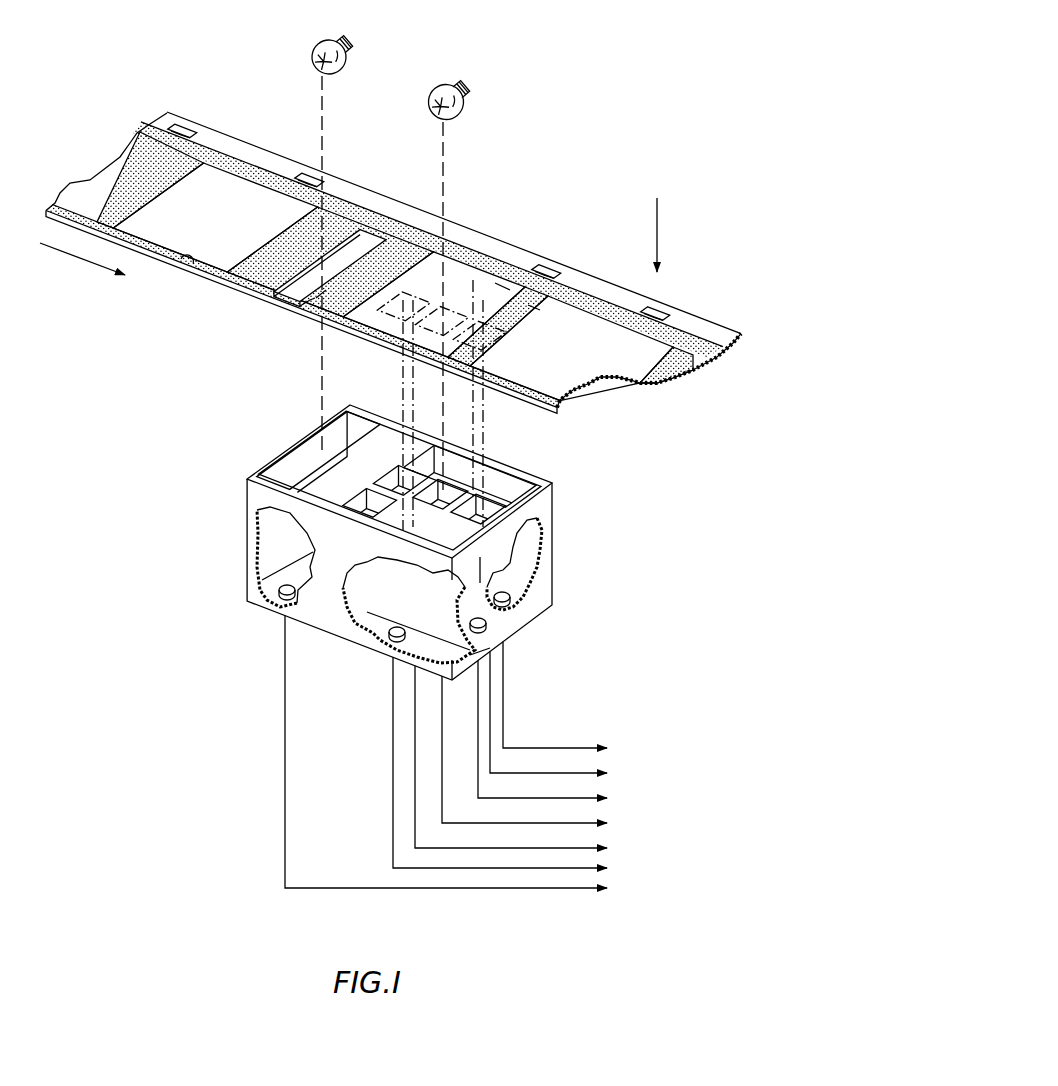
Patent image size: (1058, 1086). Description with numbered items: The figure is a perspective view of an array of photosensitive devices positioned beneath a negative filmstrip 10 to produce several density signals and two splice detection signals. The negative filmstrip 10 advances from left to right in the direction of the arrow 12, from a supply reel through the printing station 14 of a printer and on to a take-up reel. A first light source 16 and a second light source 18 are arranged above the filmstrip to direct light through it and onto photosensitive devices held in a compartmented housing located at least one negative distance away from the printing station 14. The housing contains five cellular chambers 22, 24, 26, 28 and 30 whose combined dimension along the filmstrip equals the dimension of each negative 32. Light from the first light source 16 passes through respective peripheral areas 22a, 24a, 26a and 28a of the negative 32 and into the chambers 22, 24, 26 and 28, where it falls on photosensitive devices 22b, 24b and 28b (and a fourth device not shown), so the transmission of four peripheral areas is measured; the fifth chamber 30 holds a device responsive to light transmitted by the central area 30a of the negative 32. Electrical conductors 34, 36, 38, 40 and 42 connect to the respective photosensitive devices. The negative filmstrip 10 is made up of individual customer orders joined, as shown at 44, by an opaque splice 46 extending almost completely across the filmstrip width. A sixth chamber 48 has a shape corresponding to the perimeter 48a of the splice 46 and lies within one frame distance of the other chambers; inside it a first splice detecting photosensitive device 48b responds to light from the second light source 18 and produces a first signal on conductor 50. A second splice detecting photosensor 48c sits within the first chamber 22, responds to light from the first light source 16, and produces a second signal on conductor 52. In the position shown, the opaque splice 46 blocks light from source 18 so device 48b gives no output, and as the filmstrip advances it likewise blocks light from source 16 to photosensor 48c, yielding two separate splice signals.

The negative filmstrip 10 is at (723, 353).
The arrow 12 is at (90, 257).
The printing station 14 is at (667, 224).
The first light source 16 is at (472, 93).
The second light source 18 is at (350, 48).
The first chamber 22 is at (545, 482).
The peripheral area 22a is at (533, 310).
The photosensitive device 22b is at (495, 645).
The chamber 24 is at (503, 480).
The peripheral area 24a is at (503, 285).
The photosensitive device 24b is at (508, 590).
The chamber 26 is at (392, 484).
The peripheral area 26a is at (420, 320).
The chamber 28 is at (360, 504).
The peripheral area 28a is at (410, 335).
The photosensitive device 28b is at (388, 647).
The fifth chamber 30 is at (430, 493).
The central area 30a is at (455, 300).
The negative 32 is at (135, 152).
The electrical conductor 34 is at (567, 718).
The electrical conductor 36 is at (574, 700).
The electrical conductor 38 is at (519, 768).
The electrical conductor 40 is at (530, 762).
The electrical conductor 42 is at (543, 755).
The splice location 44 is at (277, 303).
The opaque splice 46 is at (303, 318).
The sixth chamber 48 is at (297, 460).
The perimeter of the splice 48a is at (320, 338).
The first splice detecting photosensitive device 48b is at (270, 592).
The second splice detecting photosensor 48c is at (466, 618).
The conductor 50 is at (465, 757).
The conductor 52 is at (561, 735).